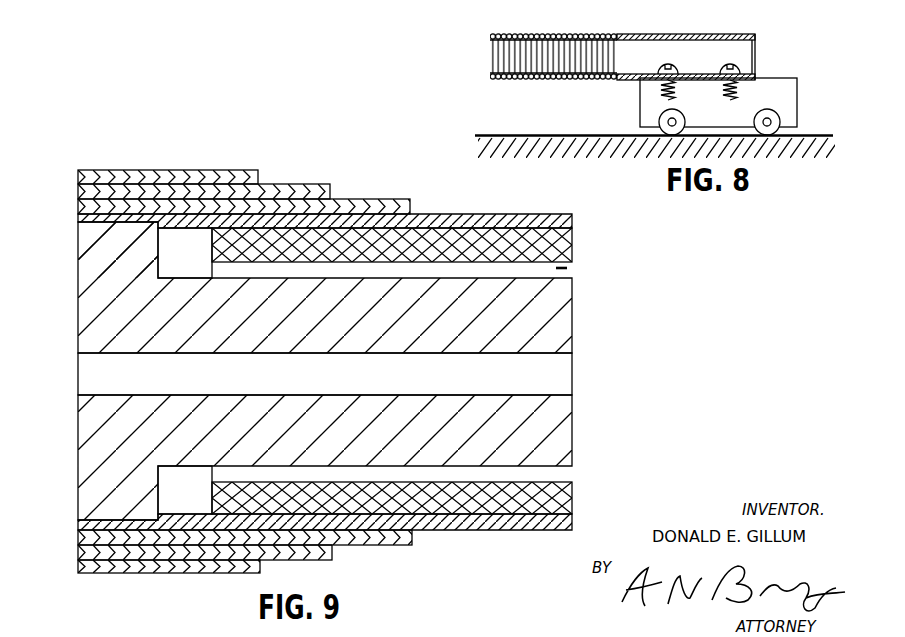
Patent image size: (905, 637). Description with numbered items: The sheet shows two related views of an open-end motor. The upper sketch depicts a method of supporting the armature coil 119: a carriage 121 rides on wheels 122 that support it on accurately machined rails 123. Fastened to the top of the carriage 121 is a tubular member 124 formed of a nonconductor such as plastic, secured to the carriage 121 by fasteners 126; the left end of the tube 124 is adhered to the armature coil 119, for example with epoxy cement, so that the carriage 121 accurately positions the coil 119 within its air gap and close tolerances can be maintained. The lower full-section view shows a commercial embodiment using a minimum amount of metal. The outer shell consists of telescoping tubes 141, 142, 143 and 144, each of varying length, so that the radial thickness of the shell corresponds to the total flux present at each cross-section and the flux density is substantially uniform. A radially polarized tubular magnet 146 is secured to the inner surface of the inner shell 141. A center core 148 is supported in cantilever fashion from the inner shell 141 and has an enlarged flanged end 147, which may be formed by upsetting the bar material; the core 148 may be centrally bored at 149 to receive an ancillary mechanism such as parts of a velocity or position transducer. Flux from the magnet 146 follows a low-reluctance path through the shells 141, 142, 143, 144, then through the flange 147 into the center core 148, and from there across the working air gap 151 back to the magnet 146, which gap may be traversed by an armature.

In FIG. 8, the armature coil 119 is at (556, 32).
In FIG. 8, the carriage 121 is at (640, 99).
In FIG. 8, the wheels 122 is at (774, 117).
In FIG. 8, the rails 123 is at (803, 135).
In FIG. 8, the tubular member 124 is at (686, 33).
In FIG. 8, the fasteners 126 is at (738, 70).
In FIG. 9, the inner shell tube 141 is at (572, 217).
In FIG. 9, the telescoping tube 142 is at (410, 203).
In FIG. 9, the telescoping tube 143 is at (330, 188).
In FIG. 9, the telescoping tube 144 is at (258, 172).
In FIG. 9, the tubular magnet 146 is at (572, 250).
In FIG. 9, the enlarged flanged end 147 is at (98, 240).
In FIG. 9, the center core 148 is at (90, 322).
In FIG. 9, the central bore 149 is at (106, 353).
In FIG. 9, the air gap 151 is at (567, 268).